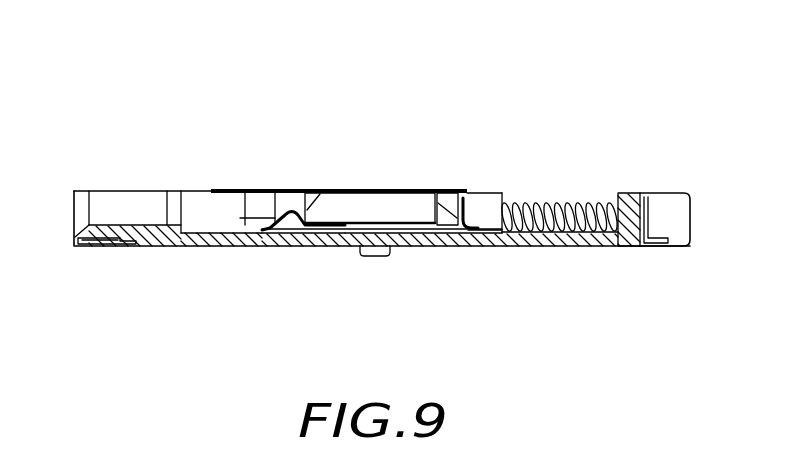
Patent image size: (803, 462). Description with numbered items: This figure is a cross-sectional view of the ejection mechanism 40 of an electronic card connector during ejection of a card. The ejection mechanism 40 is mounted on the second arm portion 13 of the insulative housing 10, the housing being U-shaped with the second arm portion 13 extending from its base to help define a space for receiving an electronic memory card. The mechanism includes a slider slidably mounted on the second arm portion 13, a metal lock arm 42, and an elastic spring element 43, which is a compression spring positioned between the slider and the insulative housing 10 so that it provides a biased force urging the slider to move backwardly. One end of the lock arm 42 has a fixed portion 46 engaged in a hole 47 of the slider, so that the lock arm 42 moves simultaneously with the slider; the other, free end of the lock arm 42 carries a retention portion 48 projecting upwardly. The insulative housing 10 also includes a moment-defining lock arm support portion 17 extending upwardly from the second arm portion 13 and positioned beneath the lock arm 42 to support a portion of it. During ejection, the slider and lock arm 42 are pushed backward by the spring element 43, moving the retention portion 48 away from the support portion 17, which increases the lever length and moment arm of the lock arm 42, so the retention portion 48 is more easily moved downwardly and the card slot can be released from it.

The insulative housing 10 is at (118, 178).
The second arm portion 13 is at (312, 246).
The lock arm support portion 17 is at (415, 247).
The ejection mechanism 40 is at (303, 162).
The lock arm 42 is at (363, 223).
The elastic spring element 43 is at (580, 205).
The fixed portion 46 is at (476, 208).
The hole 47 is at (455, 200).
The retention portion 48 is at (283, 210).